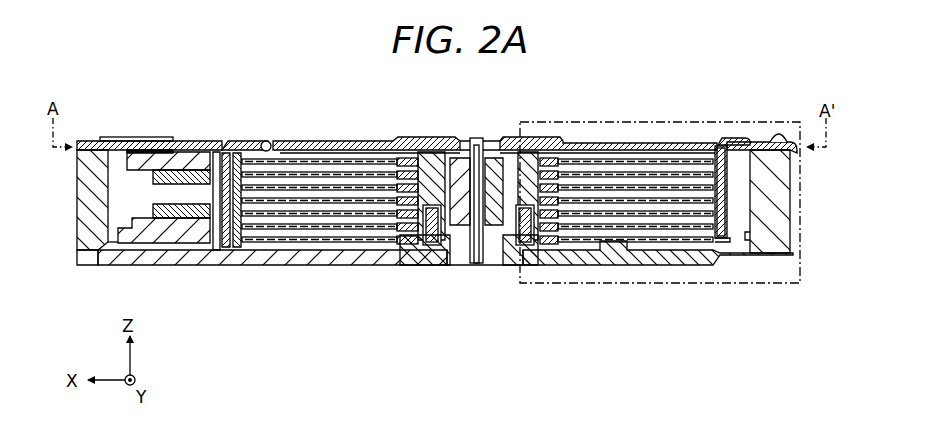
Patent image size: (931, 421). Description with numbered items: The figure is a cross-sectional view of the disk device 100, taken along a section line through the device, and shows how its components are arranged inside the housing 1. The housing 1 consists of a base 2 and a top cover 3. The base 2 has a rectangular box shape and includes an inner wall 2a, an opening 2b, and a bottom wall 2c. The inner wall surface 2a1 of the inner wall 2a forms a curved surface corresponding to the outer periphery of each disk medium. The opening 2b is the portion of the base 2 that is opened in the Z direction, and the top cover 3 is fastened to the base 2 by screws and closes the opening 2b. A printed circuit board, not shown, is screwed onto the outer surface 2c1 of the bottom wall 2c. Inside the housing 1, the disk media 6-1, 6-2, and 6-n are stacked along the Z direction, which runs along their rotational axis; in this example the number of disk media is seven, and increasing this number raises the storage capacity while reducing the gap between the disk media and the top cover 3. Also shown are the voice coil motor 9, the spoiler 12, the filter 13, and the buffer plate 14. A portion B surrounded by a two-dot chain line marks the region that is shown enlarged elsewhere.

The housing 1 is at (850, 178).
The base 2 is at (826, 214).
The inner wall 2a is at (790, 204).
The inner wall surface 2a1 is at (746, 238).
The opening 2b is at (738, 160).
The bottom wall 2c is at (573, 252).
The outer surface 2c1 is at (508, 272).
The top cover 3 is at (795, 160).
The disk medium 6-1 is at (334, 168).
The disk medium 6-2 is at (364, 178).
The disk medium 6-n is at (361, 242).
The voice coil motor 9 is at (157, 140).
The spoiler 12 is at (246, 146).
The filter 13 is at (727, 215).
The buffer plate 14 is at (595, 146).
The disk device 100 is at (226, 280).
The portion B is at (616, 285).